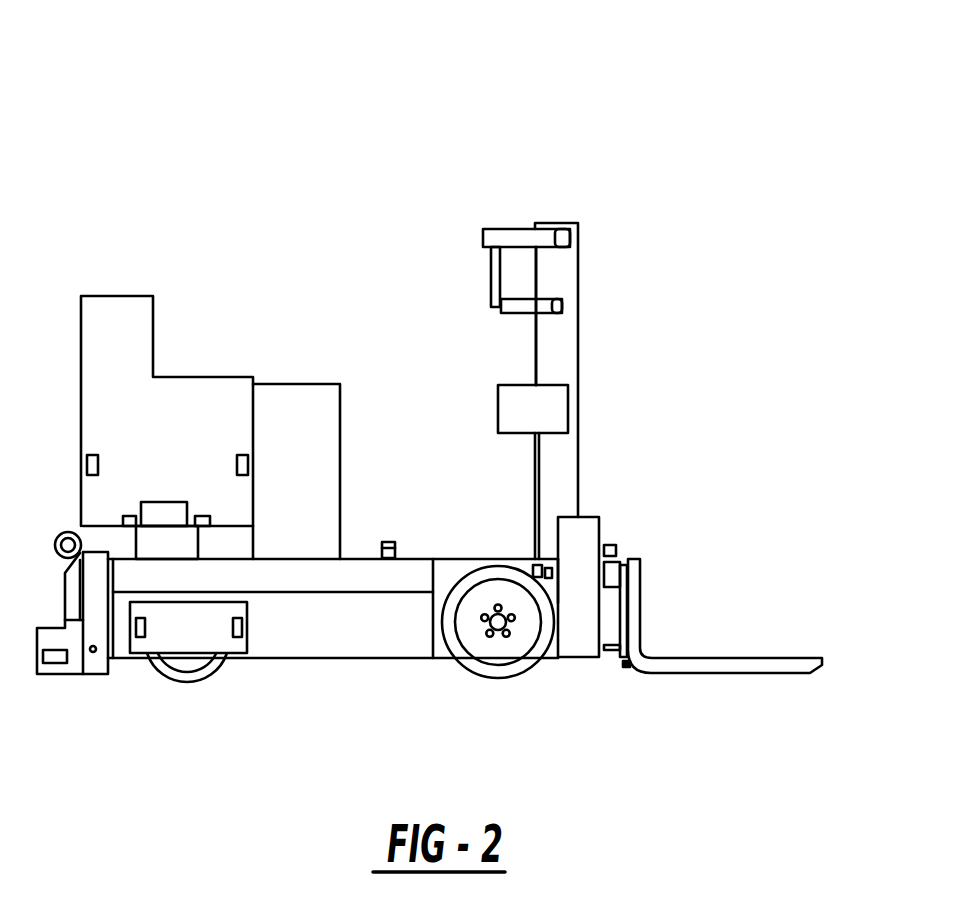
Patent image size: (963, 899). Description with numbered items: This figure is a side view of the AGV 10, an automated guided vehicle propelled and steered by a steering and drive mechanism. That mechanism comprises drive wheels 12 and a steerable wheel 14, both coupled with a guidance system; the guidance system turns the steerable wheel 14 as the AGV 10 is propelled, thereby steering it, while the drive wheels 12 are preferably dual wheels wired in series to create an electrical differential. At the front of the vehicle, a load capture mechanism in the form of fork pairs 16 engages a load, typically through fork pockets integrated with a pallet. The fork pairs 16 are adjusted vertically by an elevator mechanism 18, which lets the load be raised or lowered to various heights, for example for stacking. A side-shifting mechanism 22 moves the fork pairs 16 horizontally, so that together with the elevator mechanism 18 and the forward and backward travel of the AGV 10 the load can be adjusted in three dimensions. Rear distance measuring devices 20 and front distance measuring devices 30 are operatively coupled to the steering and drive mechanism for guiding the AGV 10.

The AGV 10 is at (187, 167).
The drive wheels 12 is at (495, 658).
The steerable wheel 14 is at (202, 670).
The fork pairs 16 is at (820, 665).
The elevator mechanism 18 is at (507, 229).
The rear distance measuring devices 20 is at (612, 545).
The side-shifting mechanism 22 is at (623, 664).
The front distance measuring devices 30 is at (388, 542).